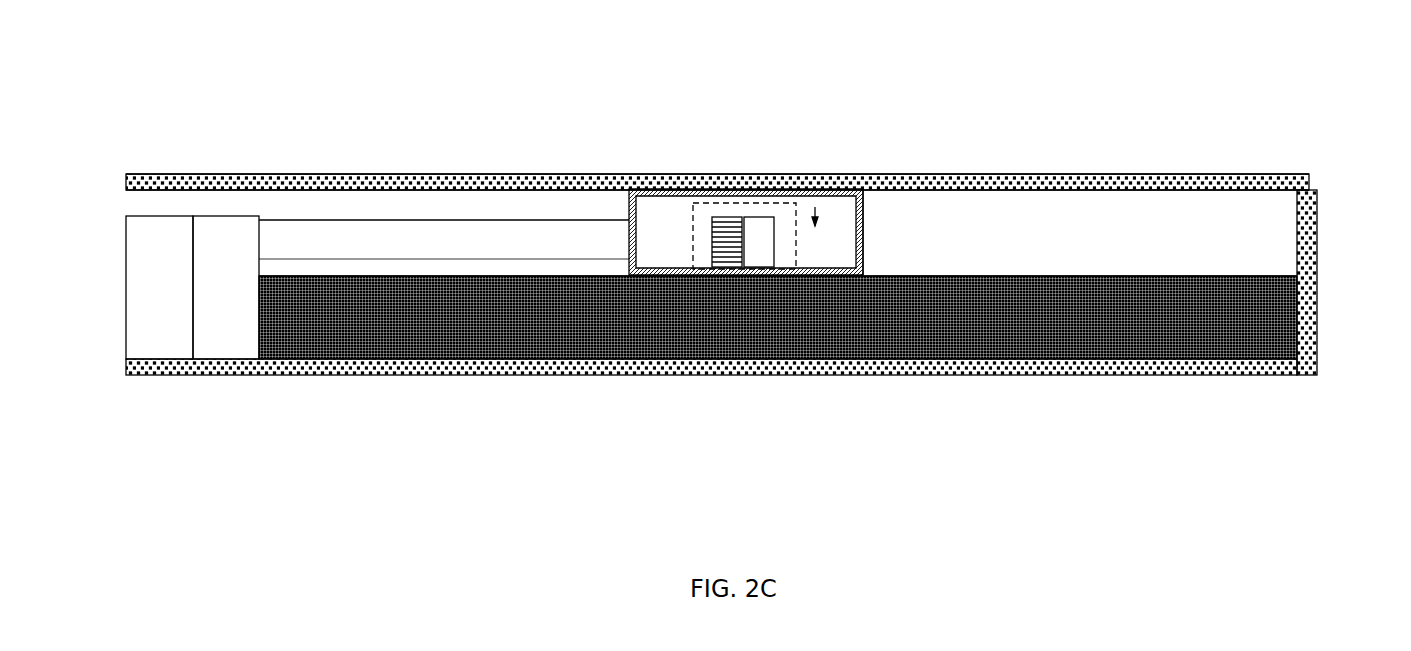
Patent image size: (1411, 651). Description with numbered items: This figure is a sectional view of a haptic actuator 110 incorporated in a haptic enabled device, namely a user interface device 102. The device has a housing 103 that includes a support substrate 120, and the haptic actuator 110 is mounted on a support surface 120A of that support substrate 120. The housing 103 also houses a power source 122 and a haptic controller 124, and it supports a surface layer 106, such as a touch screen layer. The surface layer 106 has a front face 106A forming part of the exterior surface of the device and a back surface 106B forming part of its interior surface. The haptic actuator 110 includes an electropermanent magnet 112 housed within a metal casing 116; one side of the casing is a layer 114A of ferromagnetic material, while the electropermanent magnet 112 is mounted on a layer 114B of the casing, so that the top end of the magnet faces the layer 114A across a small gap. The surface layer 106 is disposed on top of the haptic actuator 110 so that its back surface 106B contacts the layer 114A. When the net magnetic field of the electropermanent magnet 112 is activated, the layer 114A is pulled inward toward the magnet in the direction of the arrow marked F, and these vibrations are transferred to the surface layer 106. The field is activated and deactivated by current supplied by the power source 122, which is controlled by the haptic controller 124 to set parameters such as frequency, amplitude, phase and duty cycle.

The user interface device 102 is at (244, 108).
The housing 103 is at (1337, 187).
The surface layer 106 is at (717, 140).
The front face 106A is at (717, 132).
The back surface 106B is at (717, 226).
The haptic actuator 110 is at (740, 220).
The electropermanent magnet 112 is at (693, 217).
The layer of ferromagnetic material 114A is at (817, 192).
The layer 114B is at (820, 275).
The metal casing 116 is at (940, 232).
The support substrate 120 is at (778, 282).
The support surface 120A is at (778, 237).
The power source 122 is at (224, 329).
The haptic controller 124 is at (147, 327).